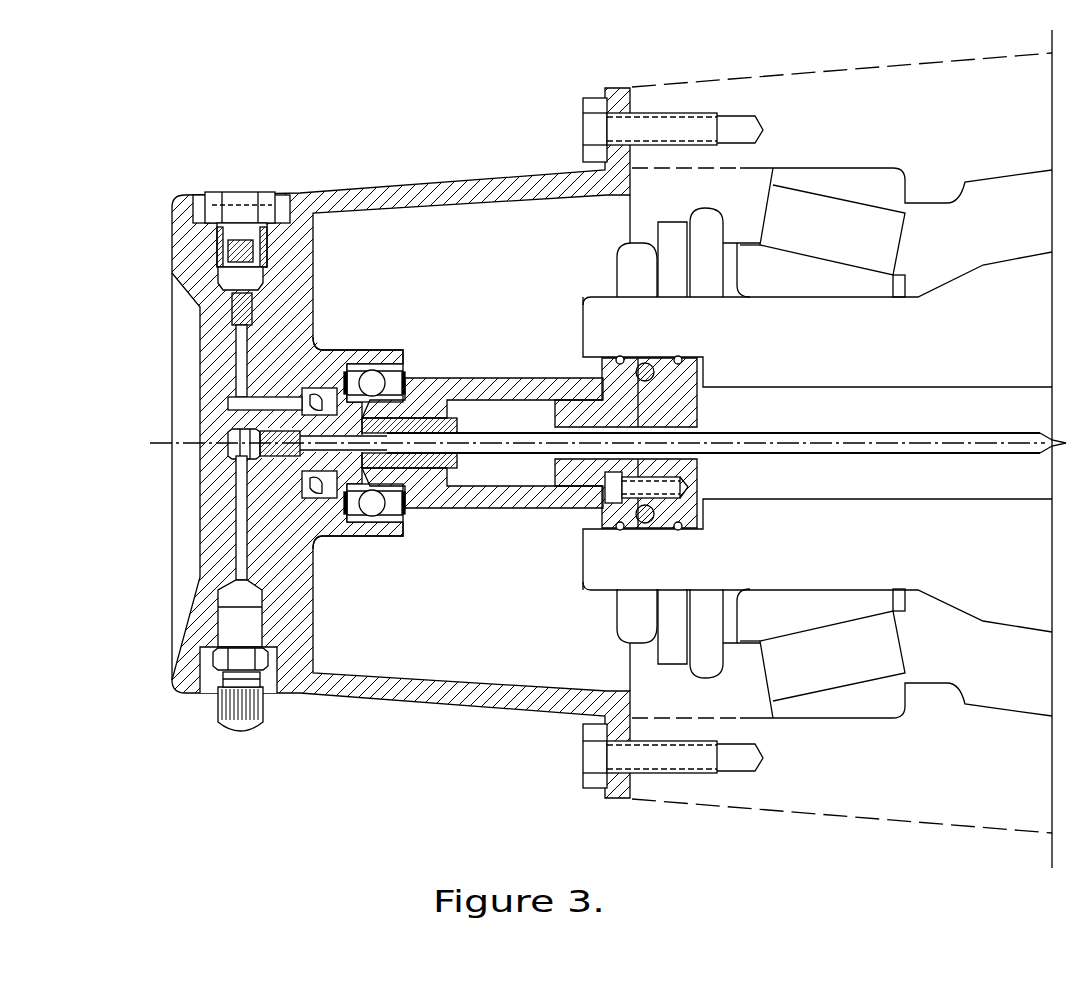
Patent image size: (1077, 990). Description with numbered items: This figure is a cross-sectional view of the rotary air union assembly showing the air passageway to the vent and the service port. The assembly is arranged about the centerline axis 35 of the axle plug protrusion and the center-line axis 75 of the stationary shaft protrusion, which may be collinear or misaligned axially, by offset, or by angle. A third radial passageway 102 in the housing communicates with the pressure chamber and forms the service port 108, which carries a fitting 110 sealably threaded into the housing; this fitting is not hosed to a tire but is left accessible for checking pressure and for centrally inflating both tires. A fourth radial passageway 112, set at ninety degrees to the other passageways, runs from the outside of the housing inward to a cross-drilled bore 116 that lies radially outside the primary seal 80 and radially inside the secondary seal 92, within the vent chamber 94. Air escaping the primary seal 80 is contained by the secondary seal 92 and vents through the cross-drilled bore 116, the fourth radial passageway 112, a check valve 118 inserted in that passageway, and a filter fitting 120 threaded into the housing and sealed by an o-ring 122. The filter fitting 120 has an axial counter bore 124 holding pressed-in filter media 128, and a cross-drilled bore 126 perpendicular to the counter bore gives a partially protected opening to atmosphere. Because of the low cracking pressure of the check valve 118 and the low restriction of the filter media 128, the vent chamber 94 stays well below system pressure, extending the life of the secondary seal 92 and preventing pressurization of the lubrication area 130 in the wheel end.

The centerline axis 35 is at (718, 444).
The center-line axis 75 is at (157, 447).
The primary seal 80 is at (283, 457).
The secondary seal 92 is at (317, 483).
The vent chamber 94 is at (315, 350).
The third radial passageway 102 is at (245, 522).
The service port 108 is at (200, 735).
The fitting 110 is at (252, 674).
The fourth radial passageway 112 is at (242, 360).
The cross-drilled bore 116 is at (236, 402).
The check valve 118 is at (232, 308).
The filter fitting 120 is at (257, 193).
The o-ring 122 is at (243, 235).
The axial counter bore 124 is at (264, 230).
The cross-drilled bore 126 is at (232, 193).
The filter media 128 is at (232, 240).
The lubrication area 130 is at (497, 283).